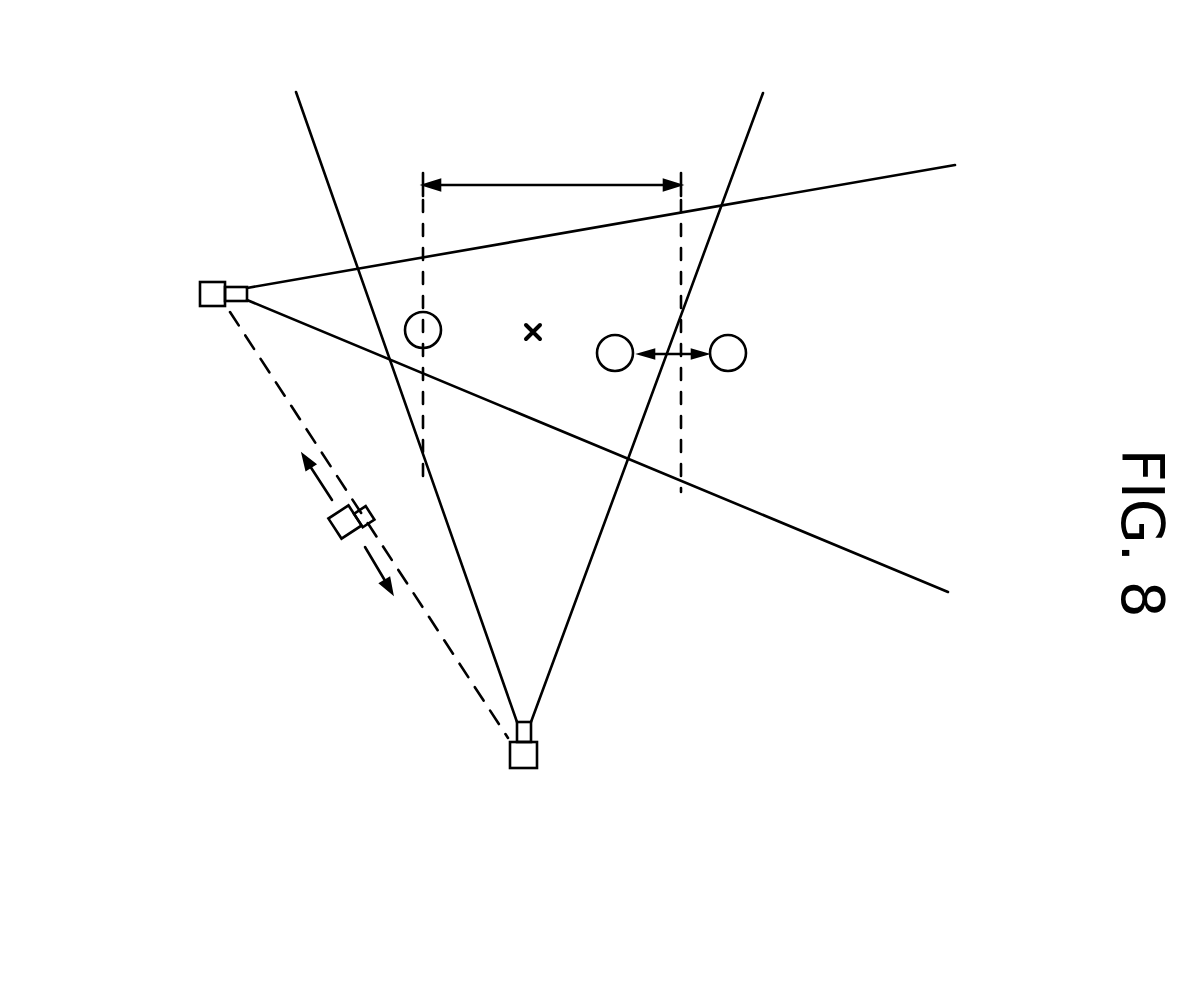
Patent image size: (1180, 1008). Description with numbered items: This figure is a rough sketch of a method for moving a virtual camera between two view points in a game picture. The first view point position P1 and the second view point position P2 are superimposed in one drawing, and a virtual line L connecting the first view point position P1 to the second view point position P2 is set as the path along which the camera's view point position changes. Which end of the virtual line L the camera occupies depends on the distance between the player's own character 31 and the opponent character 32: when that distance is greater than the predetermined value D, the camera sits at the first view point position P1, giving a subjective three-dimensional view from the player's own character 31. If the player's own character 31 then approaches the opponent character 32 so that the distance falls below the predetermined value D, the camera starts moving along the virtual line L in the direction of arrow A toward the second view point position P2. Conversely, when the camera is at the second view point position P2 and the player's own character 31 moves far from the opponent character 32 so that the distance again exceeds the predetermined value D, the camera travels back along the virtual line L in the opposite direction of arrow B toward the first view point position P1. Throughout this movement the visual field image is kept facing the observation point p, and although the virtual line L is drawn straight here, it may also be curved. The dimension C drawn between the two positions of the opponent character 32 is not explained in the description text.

The first view point position P1 is at (215, 306).
The second view point position P2 is at (537, 760).
The virtual line L is at (435, 627).
The arrow A is at (370, 570).
The arrow B is at (309, 480).
The displacement C of object 32 C is at (673, 339).
The predetermined value D is at (552, 317).
The player's own character 31 is at (440, 322).
The opponent character 32 is at (715, 338).
The observation point p is at (554, 309).